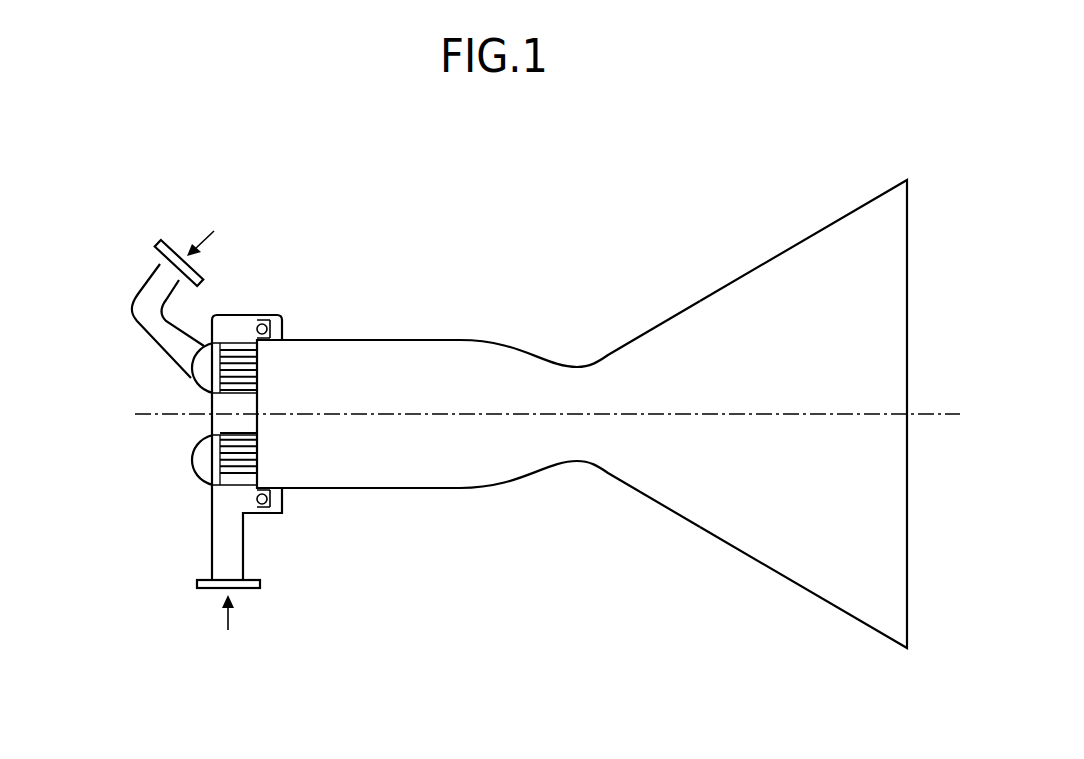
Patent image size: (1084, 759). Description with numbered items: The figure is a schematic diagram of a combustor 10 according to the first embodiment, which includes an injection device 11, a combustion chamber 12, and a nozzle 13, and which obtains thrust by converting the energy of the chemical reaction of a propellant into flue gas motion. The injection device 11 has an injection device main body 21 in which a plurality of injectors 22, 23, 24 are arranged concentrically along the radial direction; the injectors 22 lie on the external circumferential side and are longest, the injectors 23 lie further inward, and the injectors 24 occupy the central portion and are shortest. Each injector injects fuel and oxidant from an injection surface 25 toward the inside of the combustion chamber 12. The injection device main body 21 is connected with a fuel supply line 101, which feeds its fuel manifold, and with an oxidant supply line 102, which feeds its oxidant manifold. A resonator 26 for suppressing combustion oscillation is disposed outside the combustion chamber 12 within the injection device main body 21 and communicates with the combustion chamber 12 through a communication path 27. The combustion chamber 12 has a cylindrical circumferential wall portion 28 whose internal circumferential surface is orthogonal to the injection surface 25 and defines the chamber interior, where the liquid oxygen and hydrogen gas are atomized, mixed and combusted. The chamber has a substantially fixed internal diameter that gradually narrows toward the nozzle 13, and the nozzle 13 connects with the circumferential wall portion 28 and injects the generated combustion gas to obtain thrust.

The combustor 10 is at (477, 252).
The injection device 11 is at (250, 303).
The combustion chamber 12 is at (436, 500).
The nozzle 13 is at (856, 634).
The injection device main body 21 is at (235, 314).
The injector 22 is at (150, 426).
The injector 23 is at (150, 426).
The injector 24 is at (238, 486).
The injection surface 25 is at (257, 457).
The resonator 26 is at (265, 320).
The communication path 27 is at (283, 324).
The circumferential wall portion 28 is at (385, 358).
The fuel supply line 101 is at (150, 281).
The oxidant supply line 102 is at (228, 550).